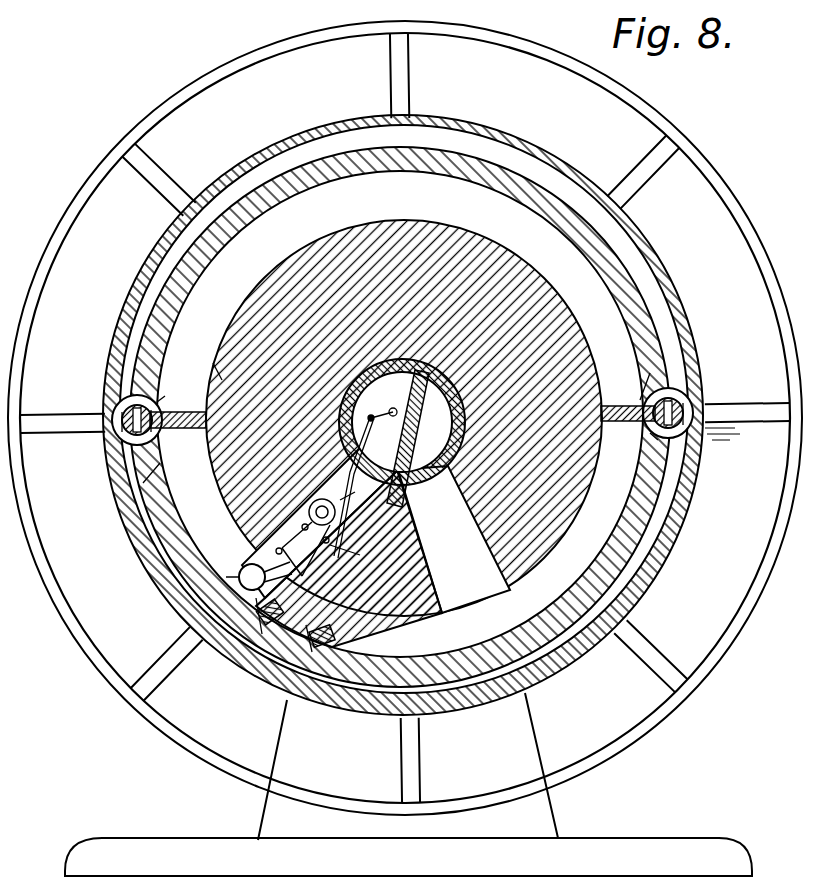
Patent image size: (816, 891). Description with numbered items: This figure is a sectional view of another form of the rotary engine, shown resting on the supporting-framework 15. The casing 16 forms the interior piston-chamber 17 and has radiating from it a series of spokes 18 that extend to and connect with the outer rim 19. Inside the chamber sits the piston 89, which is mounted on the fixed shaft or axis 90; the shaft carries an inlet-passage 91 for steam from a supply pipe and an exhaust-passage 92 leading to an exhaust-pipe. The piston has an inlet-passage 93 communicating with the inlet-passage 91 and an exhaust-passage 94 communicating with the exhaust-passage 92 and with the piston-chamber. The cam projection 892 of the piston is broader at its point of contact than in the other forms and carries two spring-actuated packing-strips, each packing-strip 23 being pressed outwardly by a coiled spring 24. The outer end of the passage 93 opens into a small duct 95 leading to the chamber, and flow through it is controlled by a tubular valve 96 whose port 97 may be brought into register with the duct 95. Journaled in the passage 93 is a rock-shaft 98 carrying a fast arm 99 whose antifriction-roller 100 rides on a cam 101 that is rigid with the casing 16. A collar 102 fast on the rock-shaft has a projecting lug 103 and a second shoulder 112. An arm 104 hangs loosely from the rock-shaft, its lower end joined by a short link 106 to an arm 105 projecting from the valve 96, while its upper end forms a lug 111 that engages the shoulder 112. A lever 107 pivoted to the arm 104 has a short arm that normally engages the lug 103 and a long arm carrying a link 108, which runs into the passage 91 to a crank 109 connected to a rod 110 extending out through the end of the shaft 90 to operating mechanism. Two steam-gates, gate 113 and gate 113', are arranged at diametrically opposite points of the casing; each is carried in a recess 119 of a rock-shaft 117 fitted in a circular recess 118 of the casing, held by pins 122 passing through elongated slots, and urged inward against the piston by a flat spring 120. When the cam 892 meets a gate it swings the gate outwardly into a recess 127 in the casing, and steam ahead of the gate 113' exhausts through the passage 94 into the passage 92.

The supporting-framework 15 is at (548, 793).
The casing 16 is at (574, 657).
The piston-chamber 17 is at (400, 417).
The spokes 18 is at (640, 648).
The outer rim 19 is at (740, 633).
The packing-strip 23 is at (322, 650).
The coiled spring 24 is at (332, 656).
The piston 89 is at (552, 301).
The cam projection 892 is at (388, 633).
The fixed shaft or axis 90 is at (456, 415).
The inlet-passage 91 is at (378, 402).
The exhaust-passage 92 is at (402, 422).
The inlet-passage 93 is at (345, 560).
The exhaust-passage 94 is at (453, 539).
The duct 95 is at (227, 567).
The tubular valve 96 is at (248, 592).
The port 97 is at (238, 584).
The rock-shaft 98 is at (318, 514).
The arm 99 is at (318, 508).
The antifriction-roller 100 is at (240, 465).
The cam 101 is at (213, 363).
The collar 102 is at (335, 508).
The lug 103 is at (300, 540).
The arm 104 is at (306, 549).
The arm 105 is at (280, 556).
The link 106 is at (302, 562).
The lever 107 is at (360, 555).
The link 108 is at (376, 450).
The crank 109 is at (390, 412).
The rod 110 is at (393, 408).
The lug 111 is at (355, 492).
The shoulder 112 is at (353, 489).
The gate 113 is at (178, 409).
The gate 113' is at (628, 424).
The rock-shaft 117 is at (697, 431).
The circular recess 118 is at (686, 396).
The recess 119 is at (678, 395).
The flat spring 120 is at (695, 414).
The pins 122 is at (650, 433).
The recess 127 is at (653, 378).